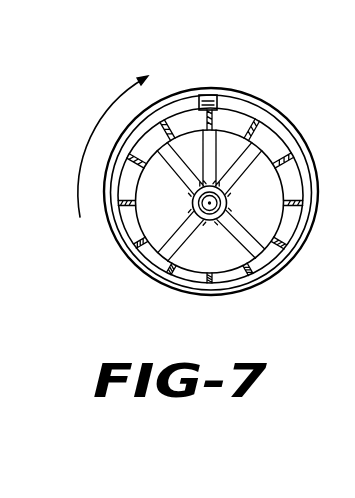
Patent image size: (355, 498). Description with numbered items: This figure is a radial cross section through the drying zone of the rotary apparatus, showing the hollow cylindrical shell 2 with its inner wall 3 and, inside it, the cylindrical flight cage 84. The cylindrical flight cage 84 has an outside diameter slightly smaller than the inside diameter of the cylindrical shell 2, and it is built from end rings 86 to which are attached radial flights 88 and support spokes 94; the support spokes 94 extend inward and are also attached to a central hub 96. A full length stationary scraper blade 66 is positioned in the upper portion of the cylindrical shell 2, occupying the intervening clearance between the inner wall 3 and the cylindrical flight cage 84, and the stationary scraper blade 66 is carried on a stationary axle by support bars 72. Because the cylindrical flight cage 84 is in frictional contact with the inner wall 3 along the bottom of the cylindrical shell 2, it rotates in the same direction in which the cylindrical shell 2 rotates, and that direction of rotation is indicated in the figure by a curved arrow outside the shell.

The cylindrical shell 2 is at (313, 167).
The inner wall 3 is at (298, 132).
The cylindrical flight cage 84 is at (268, 103).
The radial flights 88 is at (162, 288).
The support spokes 94 is at (252, 246).
The hub 96 is at (213, 219).
The support bars 72 is at (220, 96).
The stationary scraper blade 66 is at (207, 95).
The end rings 86 is at (127, 224).